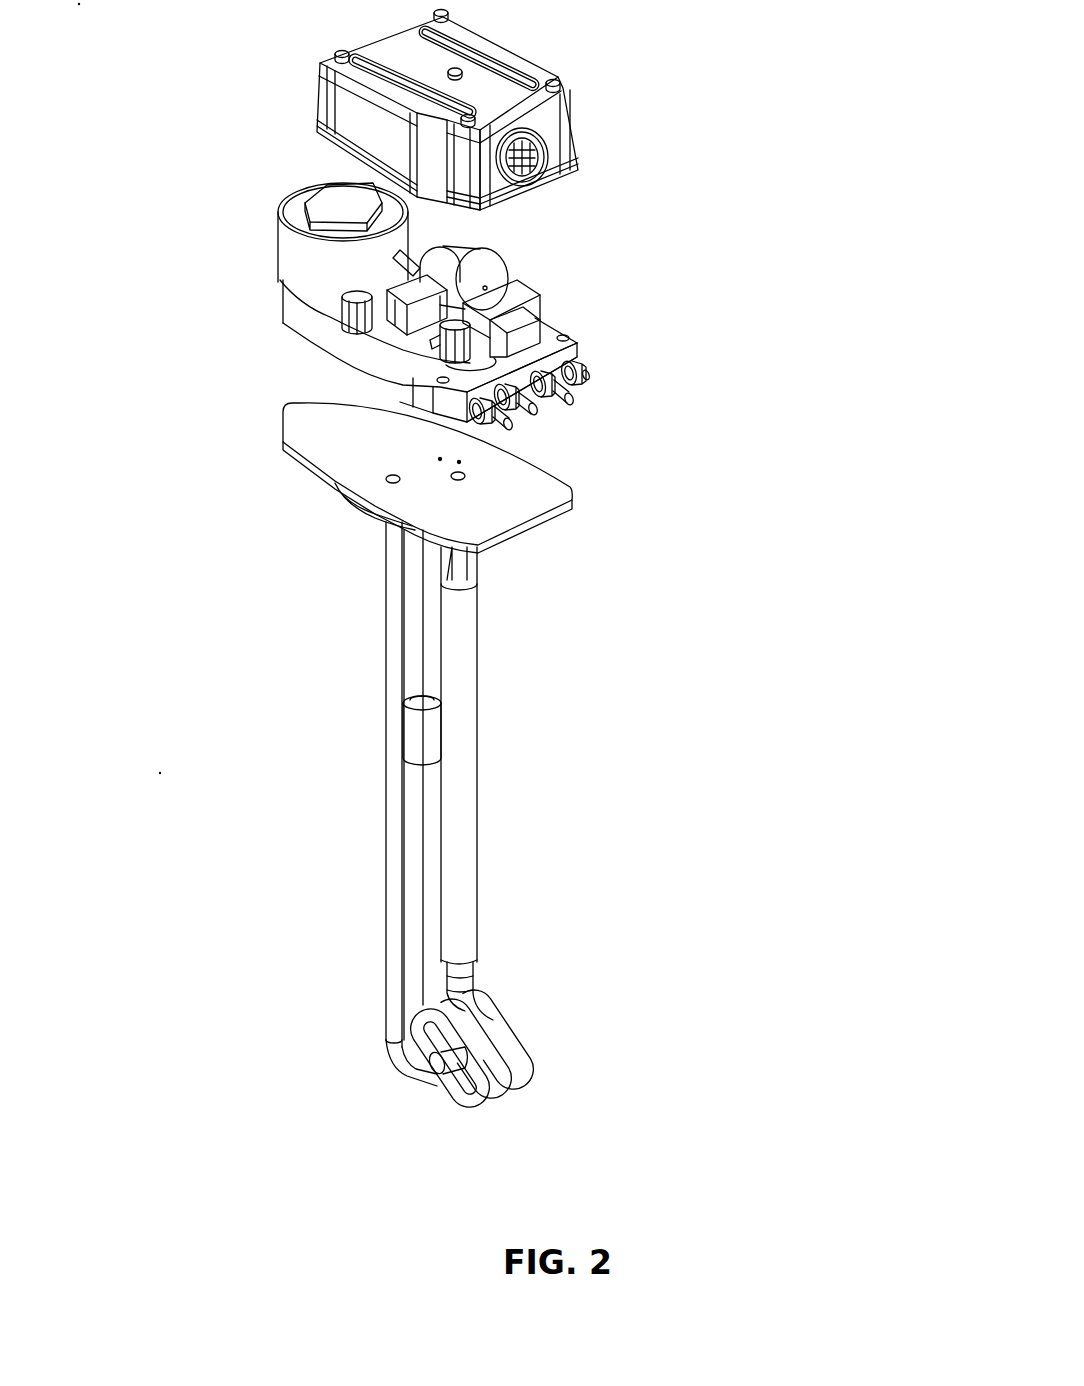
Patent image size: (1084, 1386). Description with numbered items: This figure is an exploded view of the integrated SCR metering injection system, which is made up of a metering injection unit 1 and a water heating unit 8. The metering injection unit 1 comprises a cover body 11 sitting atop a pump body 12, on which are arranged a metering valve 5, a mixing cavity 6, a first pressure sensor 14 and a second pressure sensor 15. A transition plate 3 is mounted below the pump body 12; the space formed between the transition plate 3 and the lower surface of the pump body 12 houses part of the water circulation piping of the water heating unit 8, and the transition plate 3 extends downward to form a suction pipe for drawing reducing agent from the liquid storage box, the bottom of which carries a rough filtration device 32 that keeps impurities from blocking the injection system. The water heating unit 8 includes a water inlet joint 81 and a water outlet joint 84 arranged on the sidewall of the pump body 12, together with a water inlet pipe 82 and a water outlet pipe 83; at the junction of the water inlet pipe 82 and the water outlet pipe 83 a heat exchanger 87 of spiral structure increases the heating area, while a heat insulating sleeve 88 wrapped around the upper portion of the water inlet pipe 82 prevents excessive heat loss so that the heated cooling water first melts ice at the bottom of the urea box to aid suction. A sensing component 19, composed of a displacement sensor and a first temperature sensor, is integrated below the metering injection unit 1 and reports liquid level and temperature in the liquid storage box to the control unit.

The metering injection unit 1 is at (765, 320).
The transition plate 3 is at (521, 523).
The metering valve 5 is at (427, 332).
The mixing cavity 6 is at (450, 362).
The water heating unit 8 is at (712, 445).
The cover body 11 is at (565, 133).
The pump body 12 is at (293, 320).
The first pressure sensor 14 is at (400, 322).
The second pressure sensor 15 is at (548, 292).
The sensing component 19 is at (420, 720).
The rough filtration device 32 is at (433, 1080).
The water inlet joint 81 is at (596, 388).
The water inlet pipe 82 is at (463, 968).
The water outlet pipe 83 is at (397, 913).
The water outlet joint 84 is at (505, 432).
The heat exchanger 87 is at (517, 1082).
The heat insulating sleeve 88 is at (460, 660).